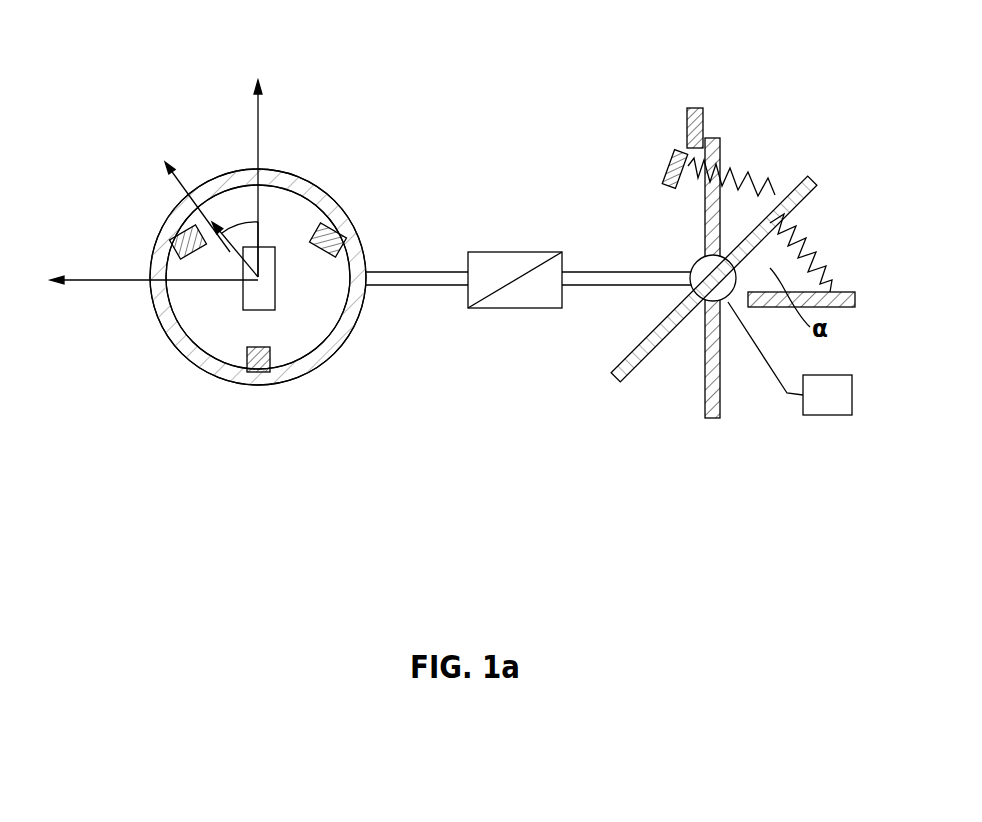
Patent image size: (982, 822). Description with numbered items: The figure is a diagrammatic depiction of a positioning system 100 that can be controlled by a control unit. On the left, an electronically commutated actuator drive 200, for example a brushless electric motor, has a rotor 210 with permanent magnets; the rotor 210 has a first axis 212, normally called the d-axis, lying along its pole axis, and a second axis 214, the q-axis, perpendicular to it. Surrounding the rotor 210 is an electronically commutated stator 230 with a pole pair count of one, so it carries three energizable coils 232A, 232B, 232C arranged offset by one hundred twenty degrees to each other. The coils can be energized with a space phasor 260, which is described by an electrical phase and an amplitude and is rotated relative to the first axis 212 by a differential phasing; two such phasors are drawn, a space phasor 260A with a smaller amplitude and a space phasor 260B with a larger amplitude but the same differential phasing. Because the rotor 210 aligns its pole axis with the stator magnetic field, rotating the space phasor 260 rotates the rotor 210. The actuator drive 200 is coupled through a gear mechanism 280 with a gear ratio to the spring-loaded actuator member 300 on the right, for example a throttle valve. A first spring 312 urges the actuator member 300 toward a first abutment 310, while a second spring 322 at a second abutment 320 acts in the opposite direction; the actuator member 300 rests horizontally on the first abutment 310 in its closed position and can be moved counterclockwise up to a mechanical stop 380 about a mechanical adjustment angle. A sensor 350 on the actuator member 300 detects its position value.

The positioning system 100 is at (186, 436).
The actuator drive 200 is at (349, 133).
The rotor 210 is at (275, 297).
The first axis 212 is at (257, 112).
The second axis 214 is at (73, 283).
The stator 230 is at (183, 347).
The energizable coil 232A is at (270, 363).
The energizable coil 232B is at (332, 228).
The energizable coil 232C is at (178, 235).
The space phasor 260 is at (166, 162).
The space phasor 260A is at (258, 243).
The space phasor 260B is at (212, 212).
The gear mechanism 280 is at (522, 252).
The actuator member 300 is at (797, 180).
The first abutment 310 is at (752, 250).
The first spring 312 is at (813, 250).
The second abutment 320 is at (668, 163).
The second spring 322 is at (765, 185).
The sensor 350 is at (827, 415).
The mechanical stop 380 is at (697, 108).